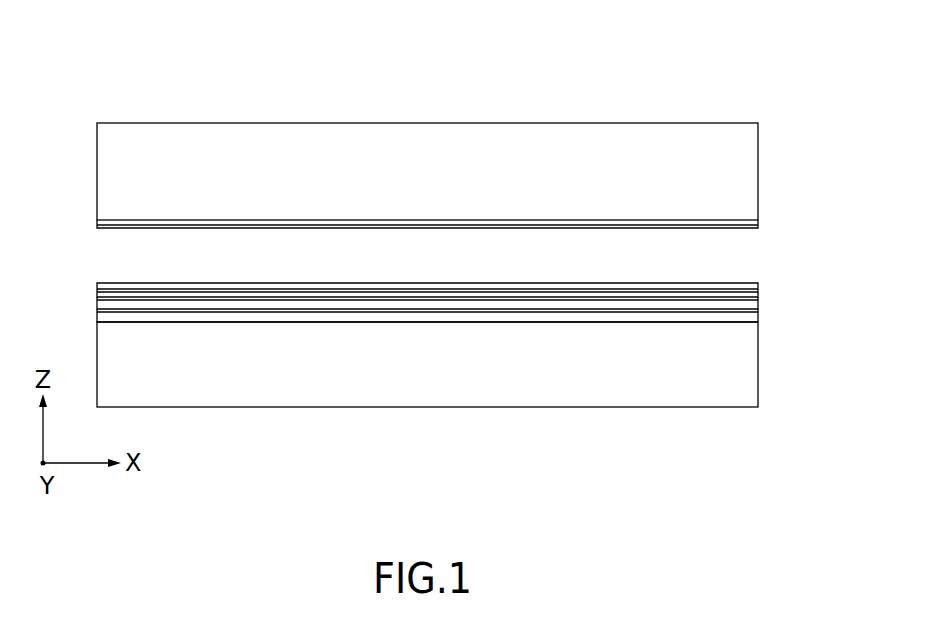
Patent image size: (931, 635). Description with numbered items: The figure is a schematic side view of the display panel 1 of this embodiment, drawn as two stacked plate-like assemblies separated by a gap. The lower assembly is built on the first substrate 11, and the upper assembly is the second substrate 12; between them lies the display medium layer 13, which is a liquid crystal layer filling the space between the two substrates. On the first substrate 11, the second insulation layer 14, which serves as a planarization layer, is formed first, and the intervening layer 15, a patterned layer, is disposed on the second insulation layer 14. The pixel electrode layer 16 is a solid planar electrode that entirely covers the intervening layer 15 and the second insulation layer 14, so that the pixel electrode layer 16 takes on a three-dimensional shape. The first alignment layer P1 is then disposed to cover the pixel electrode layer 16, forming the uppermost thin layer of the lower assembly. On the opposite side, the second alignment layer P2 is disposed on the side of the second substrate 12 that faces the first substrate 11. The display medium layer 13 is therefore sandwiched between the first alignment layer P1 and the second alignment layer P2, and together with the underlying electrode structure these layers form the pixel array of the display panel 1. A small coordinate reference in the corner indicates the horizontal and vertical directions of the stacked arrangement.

The display panel 1 is at (160, 80).
The first substrate 11 is at (750, 390).
The second substrate 12 is at (758, 148).
The display medium layer 13 is at (750, 258).
The second insulation layer 14 is at (758, 310).
The intervening layer 15 is at (758, 299).
The pixel electrode layer 16 is at (758, 291).
The first alignment layer P1 is at (758, 283).
The second alignment layer P2 is at (758, 226).